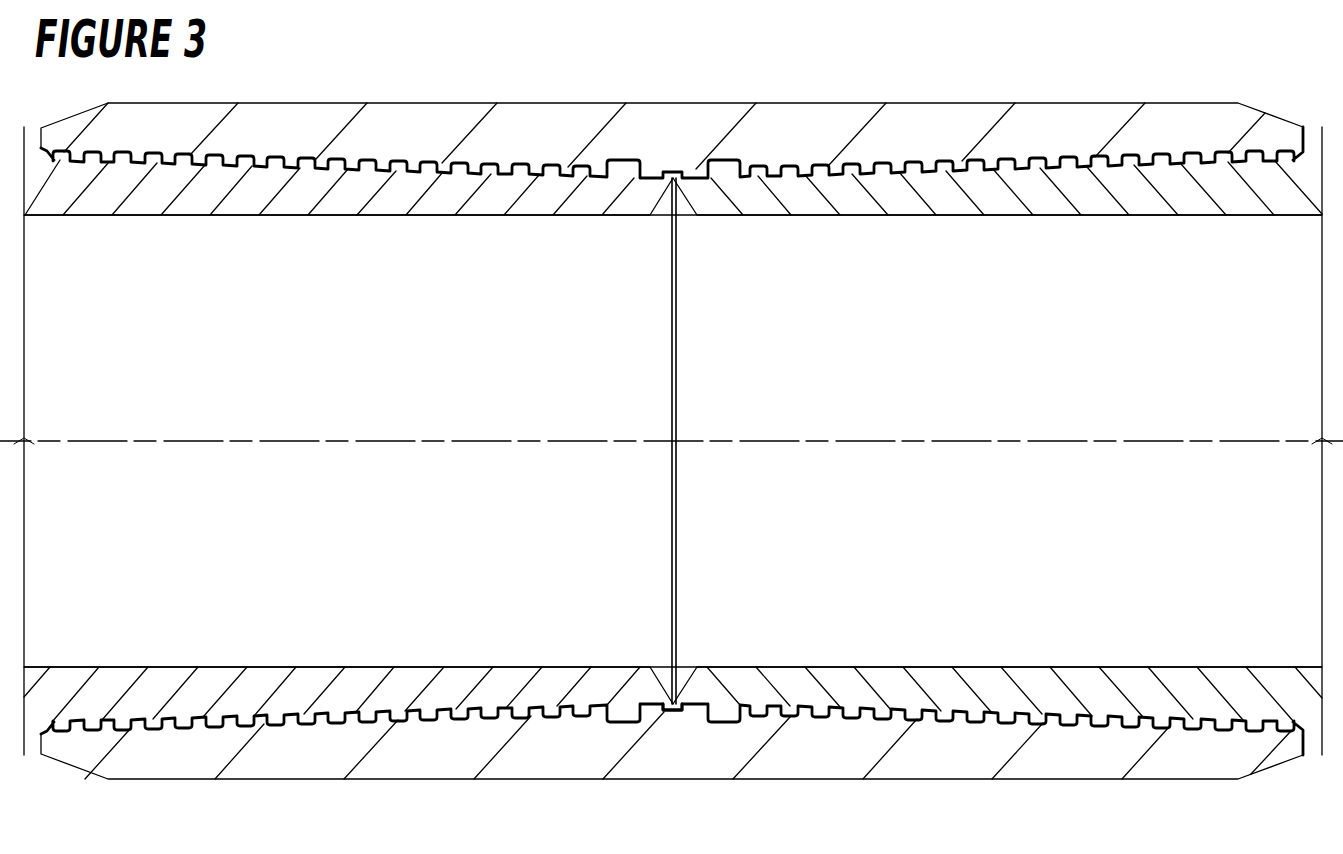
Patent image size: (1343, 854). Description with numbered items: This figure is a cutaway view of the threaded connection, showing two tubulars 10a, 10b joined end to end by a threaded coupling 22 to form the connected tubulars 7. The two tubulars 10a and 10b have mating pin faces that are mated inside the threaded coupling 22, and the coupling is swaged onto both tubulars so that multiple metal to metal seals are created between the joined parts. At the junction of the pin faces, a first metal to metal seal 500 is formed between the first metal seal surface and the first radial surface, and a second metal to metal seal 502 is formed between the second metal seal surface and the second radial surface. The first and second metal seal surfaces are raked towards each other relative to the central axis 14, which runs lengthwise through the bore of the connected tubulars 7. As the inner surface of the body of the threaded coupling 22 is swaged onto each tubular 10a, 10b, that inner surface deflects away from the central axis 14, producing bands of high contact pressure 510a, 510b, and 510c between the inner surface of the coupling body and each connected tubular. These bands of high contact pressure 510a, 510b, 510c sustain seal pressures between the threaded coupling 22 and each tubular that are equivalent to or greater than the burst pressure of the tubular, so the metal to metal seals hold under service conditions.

The connected tubulars 7 is at (988, 70).
The threaded coupling 22 is at (673, 103).
The tubular 10a is at (493, 215).
The tubular 10b is at (852, 215).
The central axis 14 is at (192, 441).
The first metal to metal seal 500 is at (653, 179).
The second metal to metal seal 502 is at (693, 179).
The band of high contact pressure 510a is at (653, 703).
The band of high contact pressure 510b is at (693, 703).
The band of high contact pressure 510c is at (685, 703).